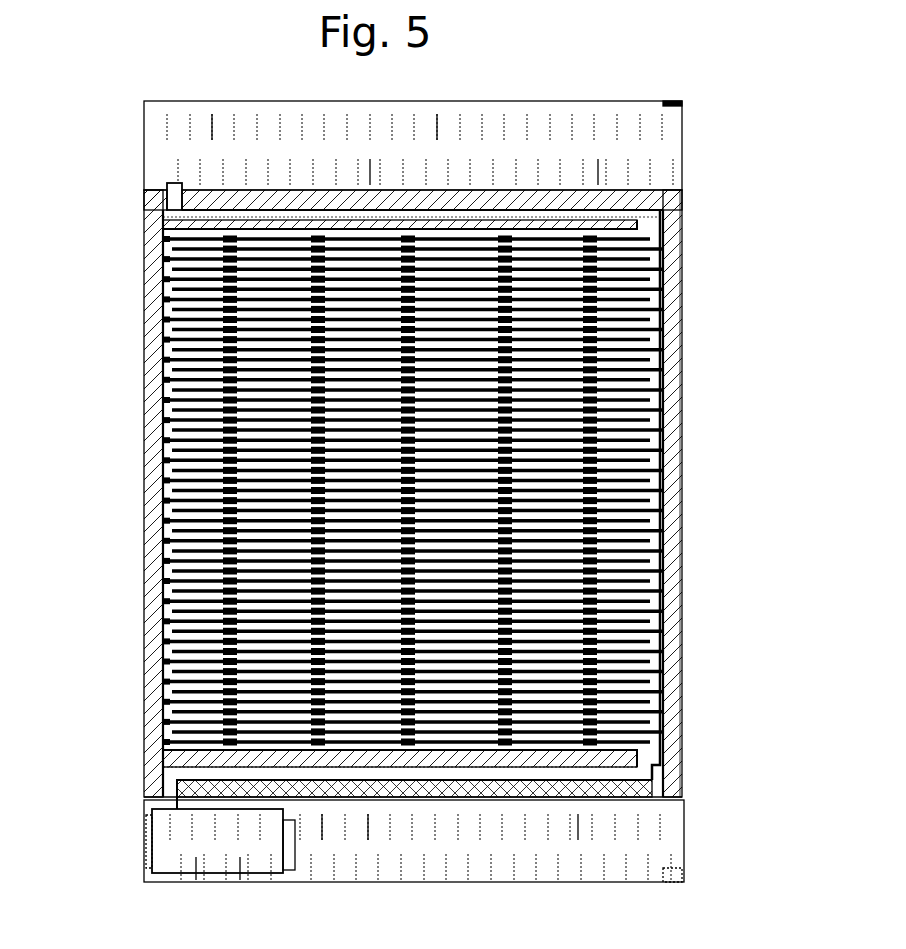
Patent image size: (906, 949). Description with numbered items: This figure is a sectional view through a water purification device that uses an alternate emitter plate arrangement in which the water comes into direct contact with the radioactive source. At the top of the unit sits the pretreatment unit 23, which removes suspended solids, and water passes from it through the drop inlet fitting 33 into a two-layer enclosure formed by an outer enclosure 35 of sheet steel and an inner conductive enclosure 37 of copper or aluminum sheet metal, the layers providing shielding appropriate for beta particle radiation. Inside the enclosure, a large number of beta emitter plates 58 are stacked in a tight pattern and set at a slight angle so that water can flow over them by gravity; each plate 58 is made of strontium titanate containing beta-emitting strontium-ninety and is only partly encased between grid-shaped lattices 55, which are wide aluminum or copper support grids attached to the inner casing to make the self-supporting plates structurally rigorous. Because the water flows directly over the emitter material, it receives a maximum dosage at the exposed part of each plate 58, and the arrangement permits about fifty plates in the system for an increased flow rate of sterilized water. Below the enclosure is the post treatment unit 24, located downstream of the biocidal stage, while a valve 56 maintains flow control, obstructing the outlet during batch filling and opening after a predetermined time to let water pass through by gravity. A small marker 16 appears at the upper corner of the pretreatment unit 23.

The end plate marker 16 is at (683, 105).
The pretreatment unit 23 is at (157, 103).
The post treatment unit 24 is at (208, 882).
The drop inlet fitting 33 is at (166, 190).
The outer enclosure 35 is at (147, 265).
The inner conductive enclosure 37 is at (682, 535).
The grid-shaped lattices 55 is at (663, 240).
The valve 56 is at (148, 848).
The beta emitter plate 58 is at (663, 325).